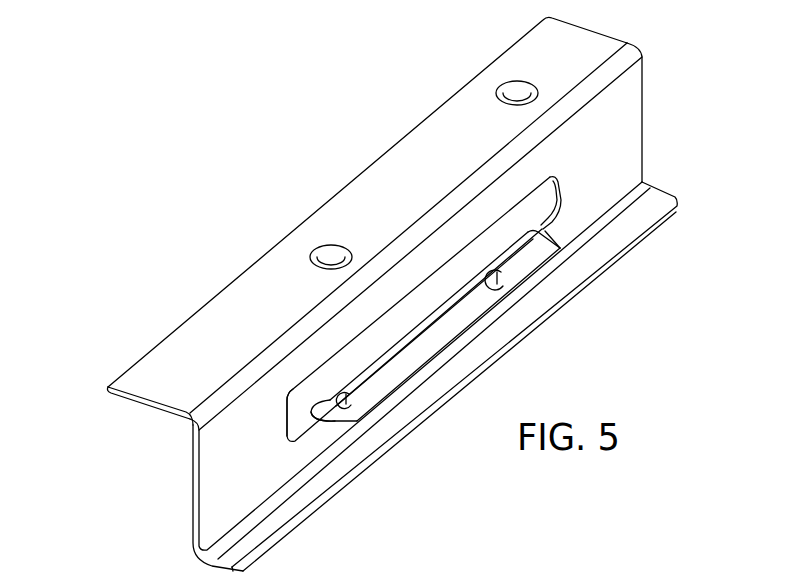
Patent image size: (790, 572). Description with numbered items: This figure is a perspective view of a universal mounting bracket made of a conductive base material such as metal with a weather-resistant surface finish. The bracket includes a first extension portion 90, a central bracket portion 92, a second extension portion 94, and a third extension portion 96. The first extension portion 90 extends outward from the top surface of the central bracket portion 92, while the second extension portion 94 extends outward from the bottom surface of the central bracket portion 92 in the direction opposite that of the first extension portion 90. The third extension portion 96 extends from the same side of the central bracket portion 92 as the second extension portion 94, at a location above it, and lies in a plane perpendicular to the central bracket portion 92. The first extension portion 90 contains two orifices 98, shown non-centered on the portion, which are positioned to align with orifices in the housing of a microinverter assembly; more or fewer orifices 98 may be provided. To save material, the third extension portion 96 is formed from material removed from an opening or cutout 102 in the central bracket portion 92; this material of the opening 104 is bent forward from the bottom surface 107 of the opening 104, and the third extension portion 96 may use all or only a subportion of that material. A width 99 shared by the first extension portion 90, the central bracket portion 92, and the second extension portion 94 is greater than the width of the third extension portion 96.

The first extension portion 90 is at (579, 41).
The central bracket portion 92 is at (628, 130).
The second extension portion 94 is at (640, 215).
The third extension portion 96 is at (473, 302).
The orifice 98 is at (517, 101).
The width 99 is at (533, 10).
The opening 102 is at (394, 366).
The opening 104 is at (296, 402).
The bottom surface 107 is at (308, 435).